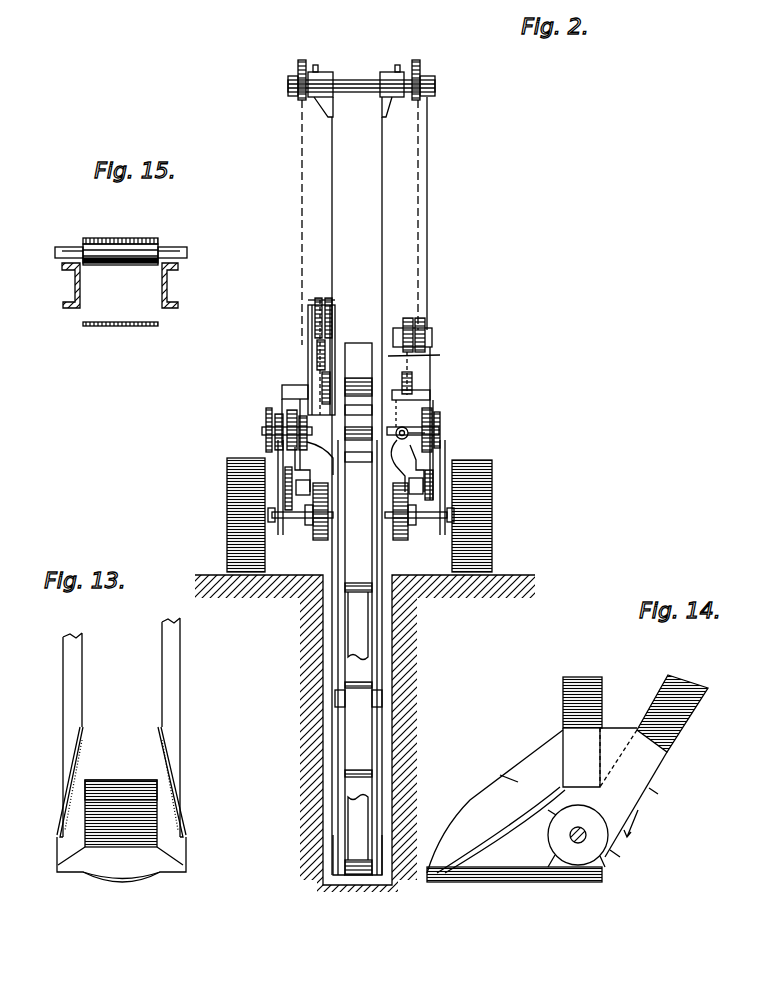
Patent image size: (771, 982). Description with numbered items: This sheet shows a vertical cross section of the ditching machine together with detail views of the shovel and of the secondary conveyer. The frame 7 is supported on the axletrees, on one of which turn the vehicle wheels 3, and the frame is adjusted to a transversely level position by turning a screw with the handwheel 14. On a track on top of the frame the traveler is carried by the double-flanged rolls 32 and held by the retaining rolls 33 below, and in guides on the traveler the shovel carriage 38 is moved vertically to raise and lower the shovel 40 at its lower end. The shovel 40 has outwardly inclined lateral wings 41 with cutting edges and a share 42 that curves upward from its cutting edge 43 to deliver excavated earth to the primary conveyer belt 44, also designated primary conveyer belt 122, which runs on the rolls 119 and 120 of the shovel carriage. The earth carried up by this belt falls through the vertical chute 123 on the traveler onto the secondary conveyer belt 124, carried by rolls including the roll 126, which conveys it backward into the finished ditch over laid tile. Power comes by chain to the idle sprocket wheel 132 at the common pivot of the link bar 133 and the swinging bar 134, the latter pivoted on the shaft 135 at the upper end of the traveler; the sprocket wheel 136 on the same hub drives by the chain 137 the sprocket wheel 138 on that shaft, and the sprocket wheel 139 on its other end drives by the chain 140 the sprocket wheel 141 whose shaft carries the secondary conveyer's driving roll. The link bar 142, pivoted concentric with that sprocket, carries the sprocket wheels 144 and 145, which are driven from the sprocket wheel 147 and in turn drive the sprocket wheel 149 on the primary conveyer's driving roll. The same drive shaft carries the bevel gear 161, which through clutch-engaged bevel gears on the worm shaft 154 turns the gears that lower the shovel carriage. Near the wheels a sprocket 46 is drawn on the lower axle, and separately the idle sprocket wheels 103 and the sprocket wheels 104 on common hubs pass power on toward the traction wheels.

In FIG. 2, the vehicle wheels 3 is at (228, 530).
In FIG. 2, the frame 7 is at (296, 460).
In FIG. 13, the handwheel 14 is at (118, 703).
In FIG. 2, the double-flanged rolls 32 is at (265, 431).
In FIG. 2, the retaining rolls 33 is at (290, 492).
In FIG. 15, the shovel carriage 38 is at (74, 289).
In FIG. 2, the shovel 40 is at (357, 882).
In FIG. 13, the shovel 40 is at (120, 741).
In FIG. 14, the shovel 40 is at (574, 732).
In FIG. 13, the lateral wings 41 is at (60, 827).
In FIG. 14, the lateral wings 41 is at (518, 782).
In FIG. 13, the share 42 is at (133, 805).
In FIG. 14, the share 42 is at (510, 837).
In FIG. 13, the cutting edge 43 is at (98, 880).
In FIG. 14, the cutting edge 43 is at (428, 878).
In FIG. 14, the primary conveyer belt 44 is at (636, 807).
In FIG. 2, the drive sprocket 46 is at (318, 537).
In FIG. 2, the idle sprocket wheels 103 is at (290, 421).
In FIG. 2, the sprocket wheels 104 is at (266, 416).
In FIG. 14, the roll 119 is at (595, 847).
In FIG. 2, the roll 120 is at (364, 688).
In FIG. 2, the primary conveyer belt 122 is at (363, 383).
In FIG. 2, the vertical chute 123 is at (370, 232).
In FIG. 2, the secondary conveyer belt 124 is at (363, 442).
In FIG. 15, the secondary conveyer belt 124 is at (137, 240).
In FIG. 15, the roll 126 is at (130, 263).
In FIG. 2, the idle sprocket wheel 132 is at (407, 320).
In FIG. 2, the link bar 133 is at (441, 355).
In FIG. 2, the swinging bar 134 is at (427, 207).
In FIG. 2, the shaft 135 is at (368, 84).
In FIG. 2, the sprocket wheel 136 is at (418, 324).
In FIG. 2, the chain 137 is at (425, 160).
In FIG. 2, the sprocket wheel 138 is at (422, 97).
In FIG. 2, the sprocket wheel 139 is at (300, 100).
In FIG. 2, the chain 140 is at (306, 266).
In FIG. 2, the sprocket wheel 141 is at (300, 410).
In FIG. 2, the link bar 142 is at (312, 345).
In FIG. 2, the sprocket wheel 144 is at (318, 302).
In FIG. 2, the sprocket wheel 145 is at (329, 300).
In FIG. 2, the sprocket wheel 147 is at (363, 426).
In FIG. 2, the sprocket wheel 149 is at (322, 386).
In FIG. 2, the shaft 154 is at (410, 434).
In FIG. 2, the bevel gear 161 is at (398, 414).